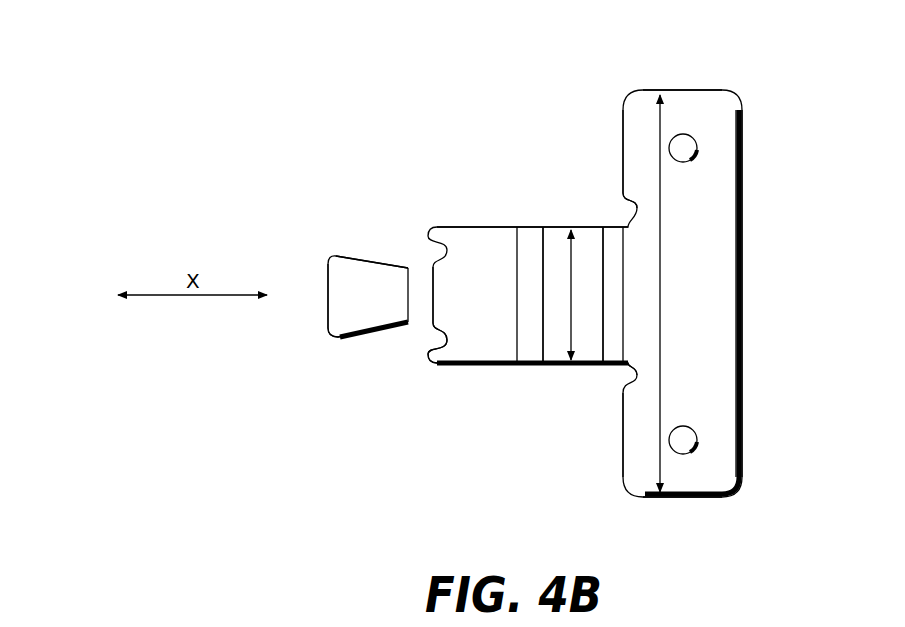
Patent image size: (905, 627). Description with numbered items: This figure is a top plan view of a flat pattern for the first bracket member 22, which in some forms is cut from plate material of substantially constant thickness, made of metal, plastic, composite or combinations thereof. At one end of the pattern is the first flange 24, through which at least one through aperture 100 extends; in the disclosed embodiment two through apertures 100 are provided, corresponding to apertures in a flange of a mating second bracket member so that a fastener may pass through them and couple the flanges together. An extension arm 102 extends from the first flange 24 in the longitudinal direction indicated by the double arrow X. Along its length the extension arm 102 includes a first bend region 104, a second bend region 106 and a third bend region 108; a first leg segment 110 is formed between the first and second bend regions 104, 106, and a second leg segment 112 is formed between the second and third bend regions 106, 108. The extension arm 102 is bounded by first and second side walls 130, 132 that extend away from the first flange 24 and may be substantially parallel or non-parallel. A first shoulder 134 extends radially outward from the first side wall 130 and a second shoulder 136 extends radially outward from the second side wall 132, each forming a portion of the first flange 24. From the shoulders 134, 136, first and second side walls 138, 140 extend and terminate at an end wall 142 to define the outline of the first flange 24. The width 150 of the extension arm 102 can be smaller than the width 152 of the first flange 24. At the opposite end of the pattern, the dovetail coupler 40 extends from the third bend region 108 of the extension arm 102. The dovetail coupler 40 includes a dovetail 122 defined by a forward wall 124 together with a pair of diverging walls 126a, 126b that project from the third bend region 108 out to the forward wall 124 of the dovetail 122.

The first bracket member 22 is at (772, 352).
The first flange 24 is at (690, 282).
The dovetail coupler 40 is at (318, 328).
The through aperture 100 is at (688, 150).
The extension arm 102 is at (415, 360).
The first bend region 104 is at (615, 250).
The second bend region 106 is at (545, 240).
The third bend region 108 is at (420, 268).
The first leg segment 110 is at (568, 366).
The second leg segment 112 is at (445, 368).
The dovetail 122 is at (352, 272).
The forward wall 124 is at (322, 285).
The diverging wall 126a is at (372, 337).
The diverging wall 126b is at (370, 258).
The first side wall 130 is at (493, 368).
The second side wall 132 is at (463, 227).
The first shoulder 134 is at (622, 430).
The second shoulder 136 is at (622, 148).
The first side wall 138 is at (688, 497).
The second side wall 140 is at (672, 90).
The end wall 142 is at (742, 172).
The width 150 is at (571, 300).
The width 152 is at (663, 226).